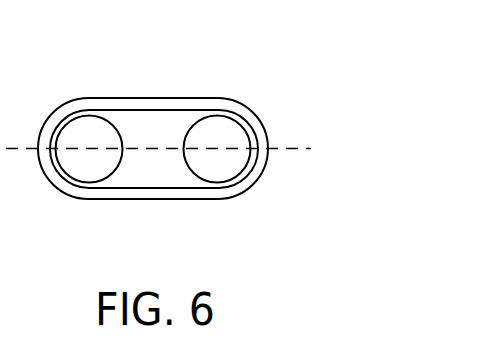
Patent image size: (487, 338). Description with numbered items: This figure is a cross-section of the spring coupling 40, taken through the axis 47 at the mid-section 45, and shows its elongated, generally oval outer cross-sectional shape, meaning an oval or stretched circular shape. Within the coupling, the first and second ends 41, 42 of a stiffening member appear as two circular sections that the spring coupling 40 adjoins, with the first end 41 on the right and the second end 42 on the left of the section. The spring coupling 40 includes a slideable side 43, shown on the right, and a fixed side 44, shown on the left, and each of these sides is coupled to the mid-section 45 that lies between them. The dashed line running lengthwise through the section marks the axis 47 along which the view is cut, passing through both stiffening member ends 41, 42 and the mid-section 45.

The spring coupling 40 is at (182, 146).
The first end of stiffening member 41 is at (213, 133).
The second end of stiffening member 42 is at (75, 162).
The slideable side 43 is at (247, 190).
The fixed side 44 is at (80, 199).
The mid-section 45 is at (288, 163).
The axis 47 is at (282, 135).